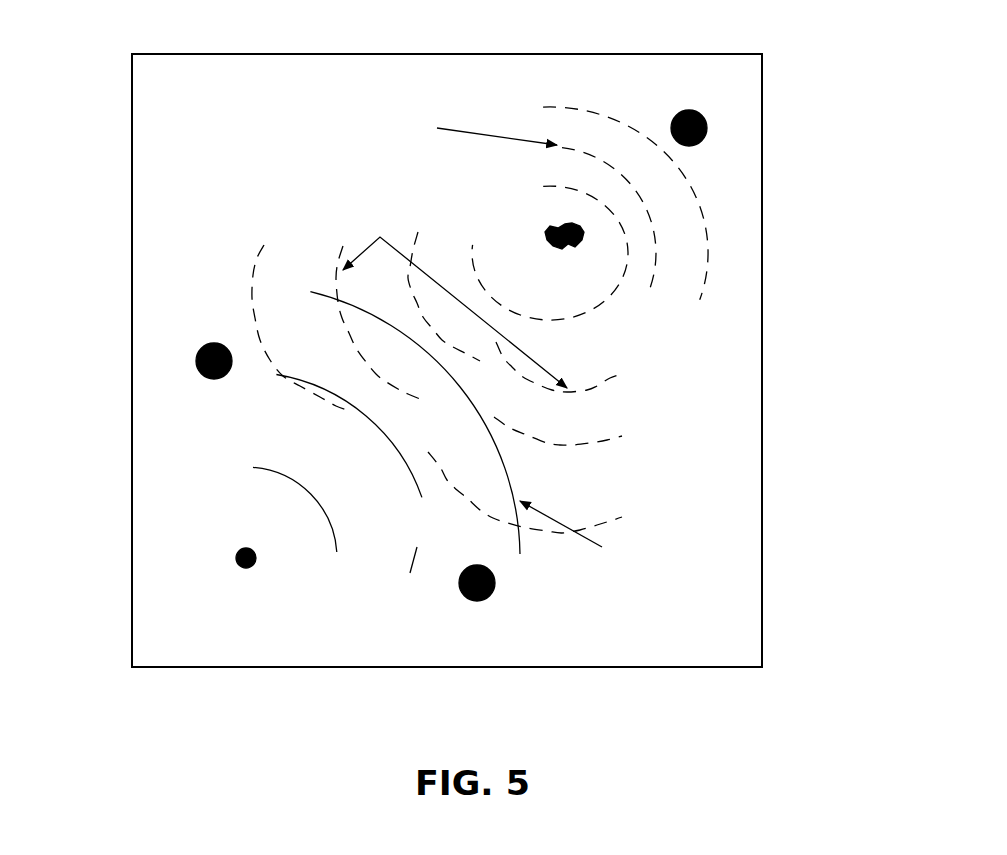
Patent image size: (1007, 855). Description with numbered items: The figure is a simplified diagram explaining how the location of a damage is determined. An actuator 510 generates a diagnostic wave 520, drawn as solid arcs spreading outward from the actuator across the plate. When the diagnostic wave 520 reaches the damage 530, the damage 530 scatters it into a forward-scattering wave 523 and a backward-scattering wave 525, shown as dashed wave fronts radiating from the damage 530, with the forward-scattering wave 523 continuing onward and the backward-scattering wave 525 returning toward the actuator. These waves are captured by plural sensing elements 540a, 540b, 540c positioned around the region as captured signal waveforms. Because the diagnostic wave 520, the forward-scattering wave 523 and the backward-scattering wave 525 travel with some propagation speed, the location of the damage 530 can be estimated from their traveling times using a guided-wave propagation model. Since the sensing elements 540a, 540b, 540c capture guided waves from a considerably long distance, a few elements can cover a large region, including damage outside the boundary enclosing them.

The actuator 510 is at (237, 552).
The diagnostic wave 520 is at (715, 577).
The forward-scattering wave 523 is at (336, 90).
The backward-scattering wave 525 is at (203, 192).
The damage 530 is at (548, 225).
The sensing element 540a is at (197, 362).
The sensing element 540b is at (707, 135).
The sensing element 540c is at (467, 567).